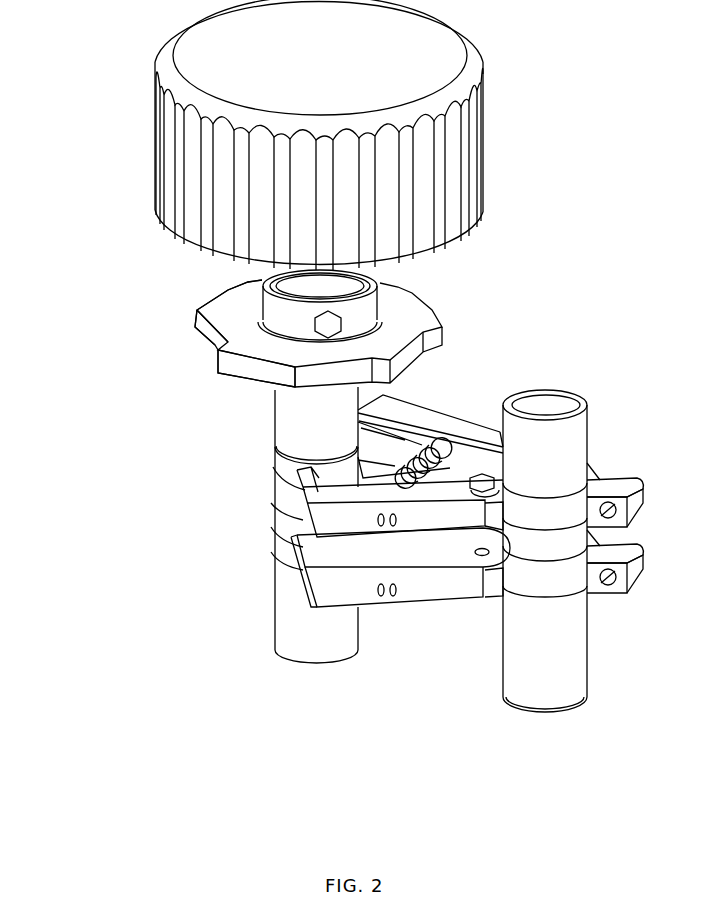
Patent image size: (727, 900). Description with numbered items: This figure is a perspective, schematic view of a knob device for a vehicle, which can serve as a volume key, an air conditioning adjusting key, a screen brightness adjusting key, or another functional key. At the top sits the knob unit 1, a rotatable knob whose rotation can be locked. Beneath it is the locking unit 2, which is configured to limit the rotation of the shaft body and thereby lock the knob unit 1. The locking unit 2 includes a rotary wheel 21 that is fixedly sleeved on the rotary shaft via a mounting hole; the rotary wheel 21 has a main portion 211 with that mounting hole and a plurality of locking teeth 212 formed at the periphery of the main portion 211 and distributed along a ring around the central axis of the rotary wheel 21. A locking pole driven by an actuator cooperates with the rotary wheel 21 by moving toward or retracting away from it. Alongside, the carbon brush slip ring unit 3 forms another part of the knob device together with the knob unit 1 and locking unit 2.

The knob unit 1 is at (141, 158).
The locking unit 2 is at (305, 463).
The rotary wheel 21 is at (264, 366).
The main portion 211 is at (195, 322).
The locking teeth 212 is at (247, 372).
The carbon brush slip ring unit 3 is at (478, 395).